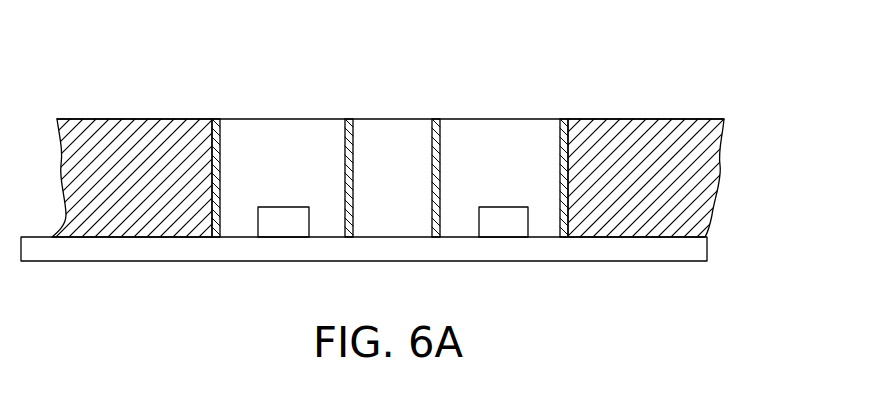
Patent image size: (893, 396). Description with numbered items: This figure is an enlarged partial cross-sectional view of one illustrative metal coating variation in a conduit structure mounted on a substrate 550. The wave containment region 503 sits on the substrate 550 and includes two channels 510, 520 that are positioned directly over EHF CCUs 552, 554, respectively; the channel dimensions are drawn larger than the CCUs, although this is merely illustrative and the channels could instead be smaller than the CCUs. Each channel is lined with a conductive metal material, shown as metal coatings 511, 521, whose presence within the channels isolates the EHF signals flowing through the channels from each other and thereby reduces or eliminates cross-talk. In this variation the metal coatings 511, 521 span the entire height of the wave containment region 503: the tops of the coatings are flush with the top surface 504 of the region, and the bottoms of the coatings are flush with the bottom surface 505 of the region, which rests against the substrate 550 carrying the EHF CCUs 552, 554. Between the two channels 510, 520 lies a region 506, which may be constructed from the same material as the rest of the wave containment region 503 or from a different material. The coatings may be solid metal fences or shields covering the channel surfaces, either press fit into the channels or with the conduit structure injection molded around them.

The wave containment region 503 is at (640, 119).
The top surface 504 is at (137, 119).
The bottom surface 505 is at (163, 238).
The region 506 is at (411, 191).
The channel 510 is at (288, 119).
The metal coating 511 is at (217, 119).
The channel 520 is at (479, 119).
The metal coating 521 is at (437, 119).
The substrate 550 is at (707, 247).
The EHF CCU 552 is at (309, 215).
The EHF CCU 554 is at (529, 212).